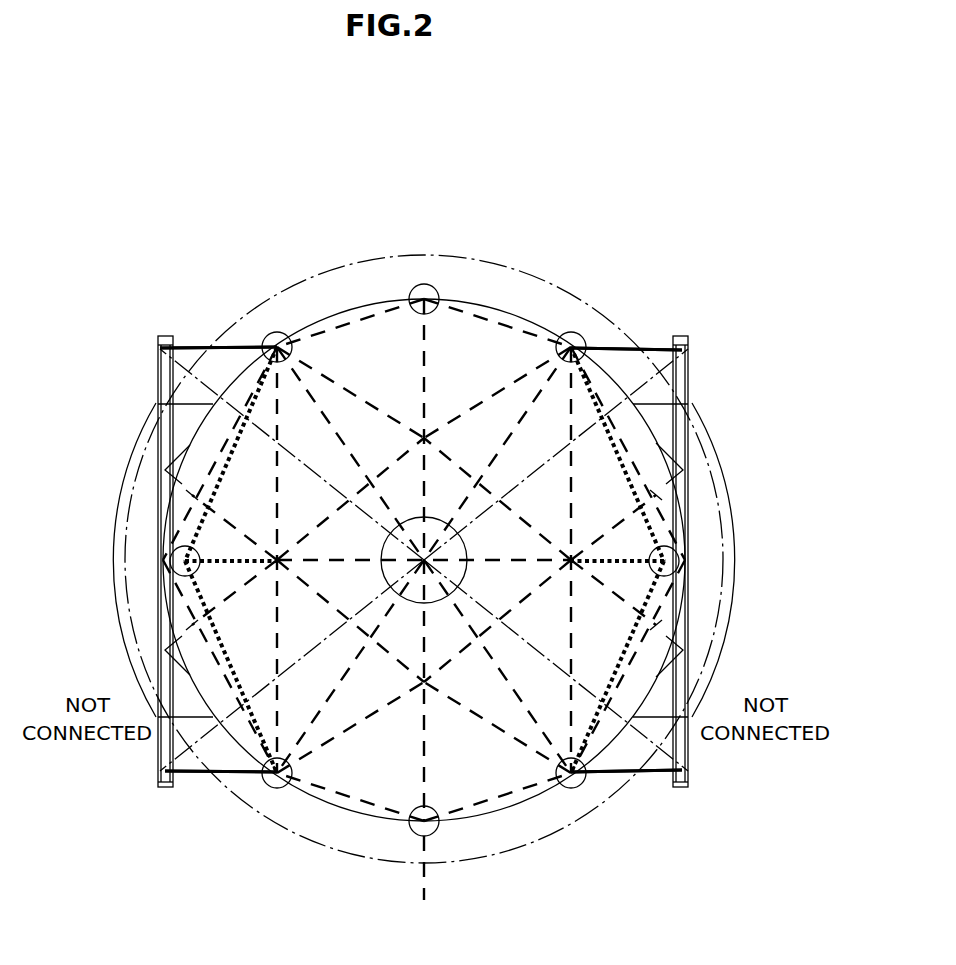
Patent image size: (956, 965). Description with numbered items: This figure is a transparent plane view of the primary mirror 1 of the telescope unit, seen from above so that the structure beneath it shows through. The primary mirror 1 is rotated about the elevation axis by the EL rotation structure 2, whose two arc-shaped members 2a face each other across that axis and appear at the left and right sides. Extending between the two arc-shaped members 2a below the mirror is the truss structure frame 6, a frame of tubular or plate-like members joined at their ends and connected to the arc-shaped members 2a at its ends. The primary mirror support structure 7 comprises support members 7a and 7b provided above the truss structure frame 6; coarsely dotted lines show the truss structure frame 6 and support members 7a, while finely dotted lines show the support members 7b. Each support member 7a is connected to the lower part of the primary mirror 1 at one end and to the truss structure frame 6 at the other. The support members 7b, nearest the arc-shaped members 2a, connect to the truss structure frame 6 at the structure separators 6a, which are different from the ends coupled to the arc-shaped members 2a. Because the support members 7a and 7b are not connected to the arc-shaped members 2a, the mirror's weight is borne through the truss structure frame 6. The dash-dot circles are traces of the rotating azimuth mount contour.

The primary mirror 1 is at (348, 315).
The EL rotation structure 2 is at (423, 560).
The arc-shaped member 2a is at (165, 790).
The truss structure frame 6 is at (383, 623).
The structure separator 6a is at (275, 333).
The primary mirror support structure 7 is at (421, 559).
The support member 7a is at (433, 830).
The support member 7b is at (215, 420).